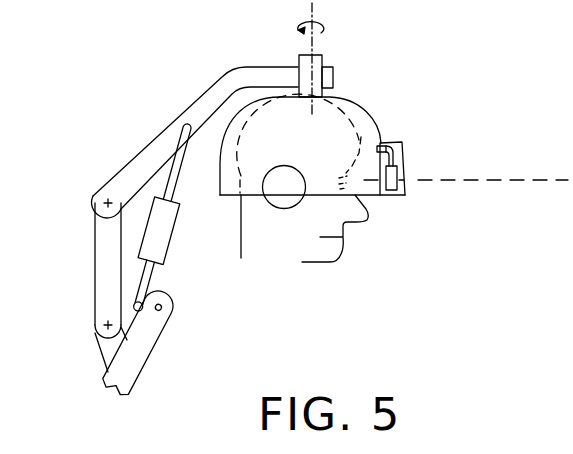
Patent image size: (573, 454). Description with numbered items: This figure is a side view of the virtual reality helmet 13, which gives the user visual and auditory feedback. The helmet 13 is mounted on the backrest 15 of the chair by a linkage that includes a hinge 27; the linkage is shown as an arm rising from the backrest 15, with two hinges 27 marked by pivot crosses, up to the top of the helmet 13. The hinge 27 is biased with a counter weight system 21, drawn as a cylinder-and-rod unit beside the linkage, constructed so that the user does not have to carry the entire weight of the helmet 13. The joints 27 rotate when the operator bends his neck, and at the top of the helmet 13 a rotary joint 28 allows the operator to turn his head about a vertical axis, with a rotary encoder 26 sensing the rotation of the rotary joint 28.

The virtual reality helmet 13 is at (382, 97).
The backrest 15 is at (138, 362).
The counter weight system 21 is at (165, 238).
The rotary encoder 26 is at (317, 58).
The hinge 27 is at (97, 200).
The rotary joint 28 is at (303, 78).